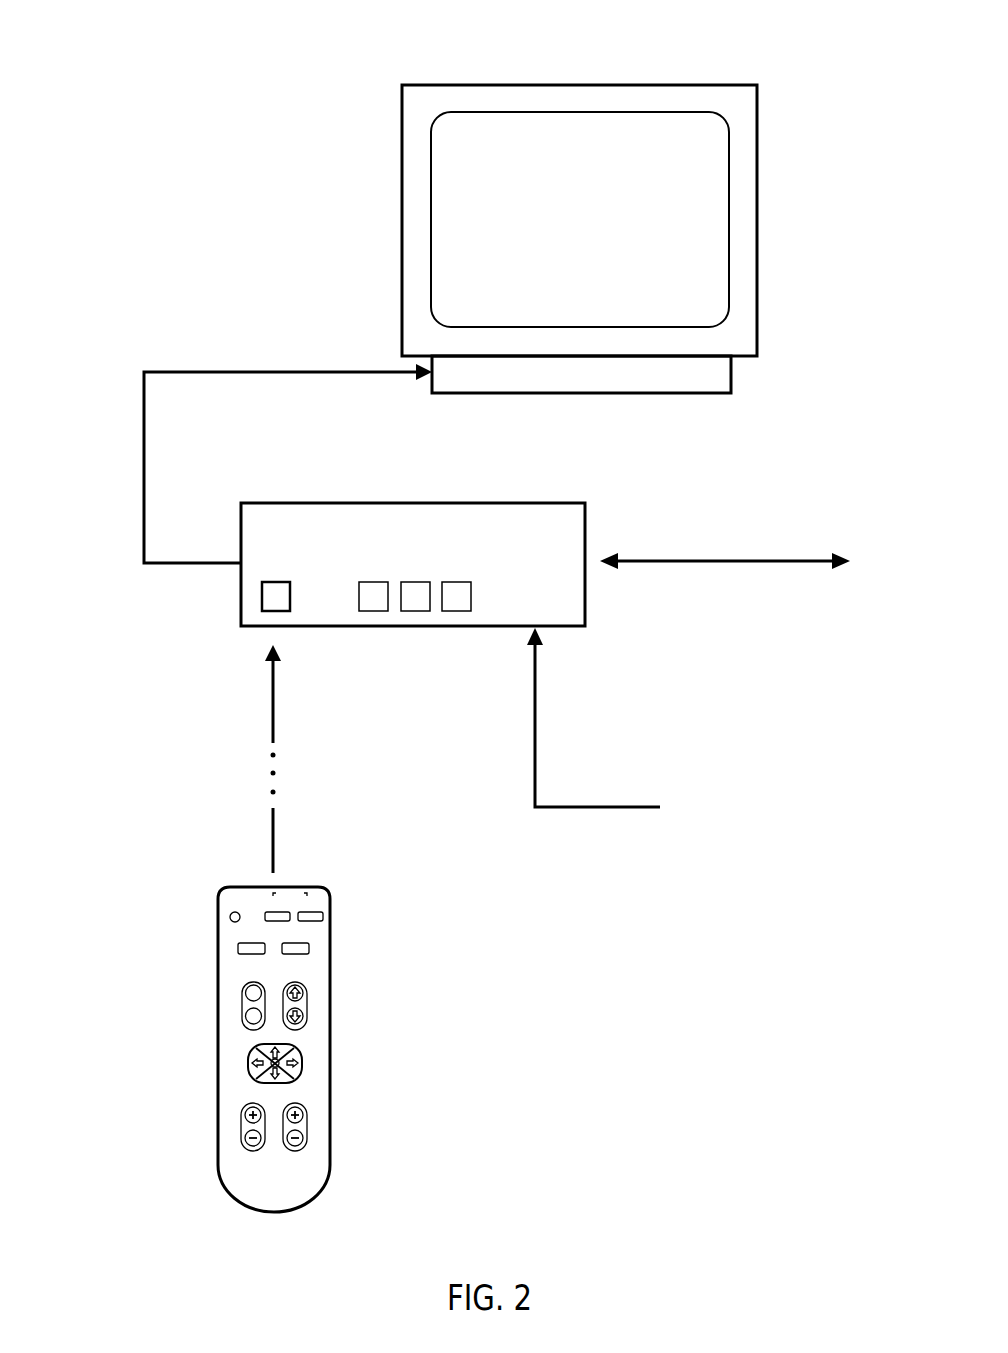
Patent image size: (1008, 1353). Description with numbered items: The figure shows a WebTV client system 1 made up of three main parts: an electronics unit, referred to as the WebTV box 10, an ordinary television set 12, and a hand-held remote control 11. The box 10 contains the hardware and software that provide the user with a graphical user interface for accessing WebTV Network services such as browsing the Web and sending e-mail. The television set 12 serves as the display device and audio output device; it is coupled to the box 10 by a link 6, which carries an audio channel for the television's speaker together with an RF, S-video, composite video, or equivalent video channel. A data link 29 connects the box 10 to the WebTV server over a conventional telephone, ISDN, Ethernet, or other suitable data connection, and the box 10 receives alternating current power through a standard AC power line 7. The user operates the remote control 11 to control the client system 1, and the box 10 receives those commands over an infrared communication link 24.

The WebTV client system 1 is at (795, 55).
The television set 12 is at (698, 316).
The link 6 is at (144, 452).
The electronics unit 10 is at (578, 610).
The infrared communication link 24 is at (274, 603).
The data link 29 is at (675, 561).
The AC power line 7 is at (568, 808).
The hand-held remote control 11 is at (287, 1193).